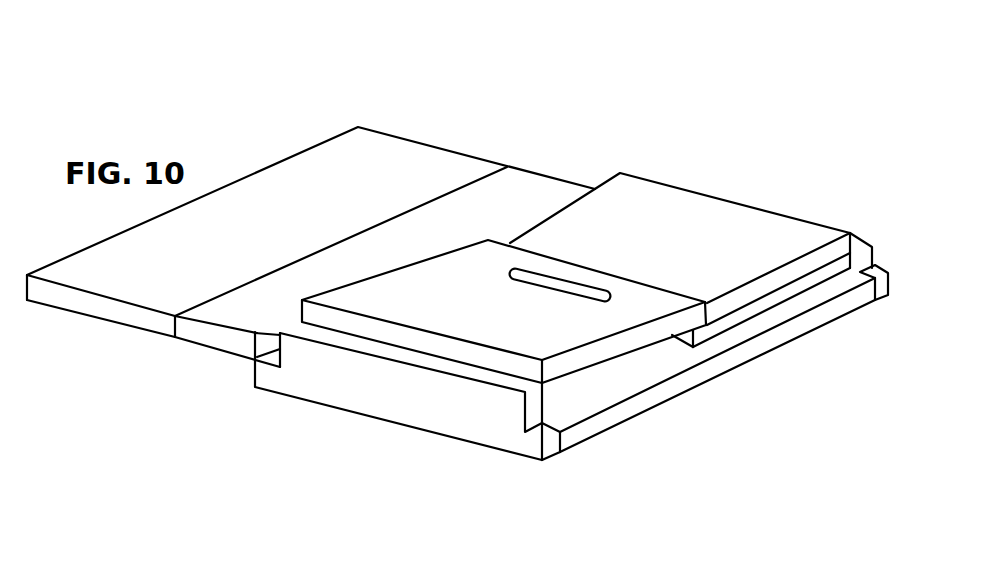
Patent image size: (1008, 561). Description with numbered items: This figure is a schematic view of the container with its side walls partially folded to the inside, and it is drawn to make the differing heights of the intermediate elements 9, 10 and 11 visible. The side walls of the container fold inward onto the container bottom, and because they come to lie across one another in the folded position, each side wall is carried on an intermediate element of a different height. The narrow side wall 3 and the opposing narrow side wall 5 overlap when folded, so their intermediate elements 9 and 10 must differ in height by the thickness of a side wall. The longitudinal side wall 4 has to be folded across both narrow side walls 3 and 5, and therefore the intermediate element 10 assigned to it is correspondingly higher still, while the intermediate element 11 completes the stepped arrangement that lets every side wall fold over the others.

The narrow side wall 3 is at (693, 212).
The longitudinal side wall 4 is at (353, 198).
The narrow side wall 5 is at (458, 320).
The intermediate element 9 is at (870, 260).
The intermediate element 10 is at (520, 190).
The intermediate element 11 is at (512, 428).